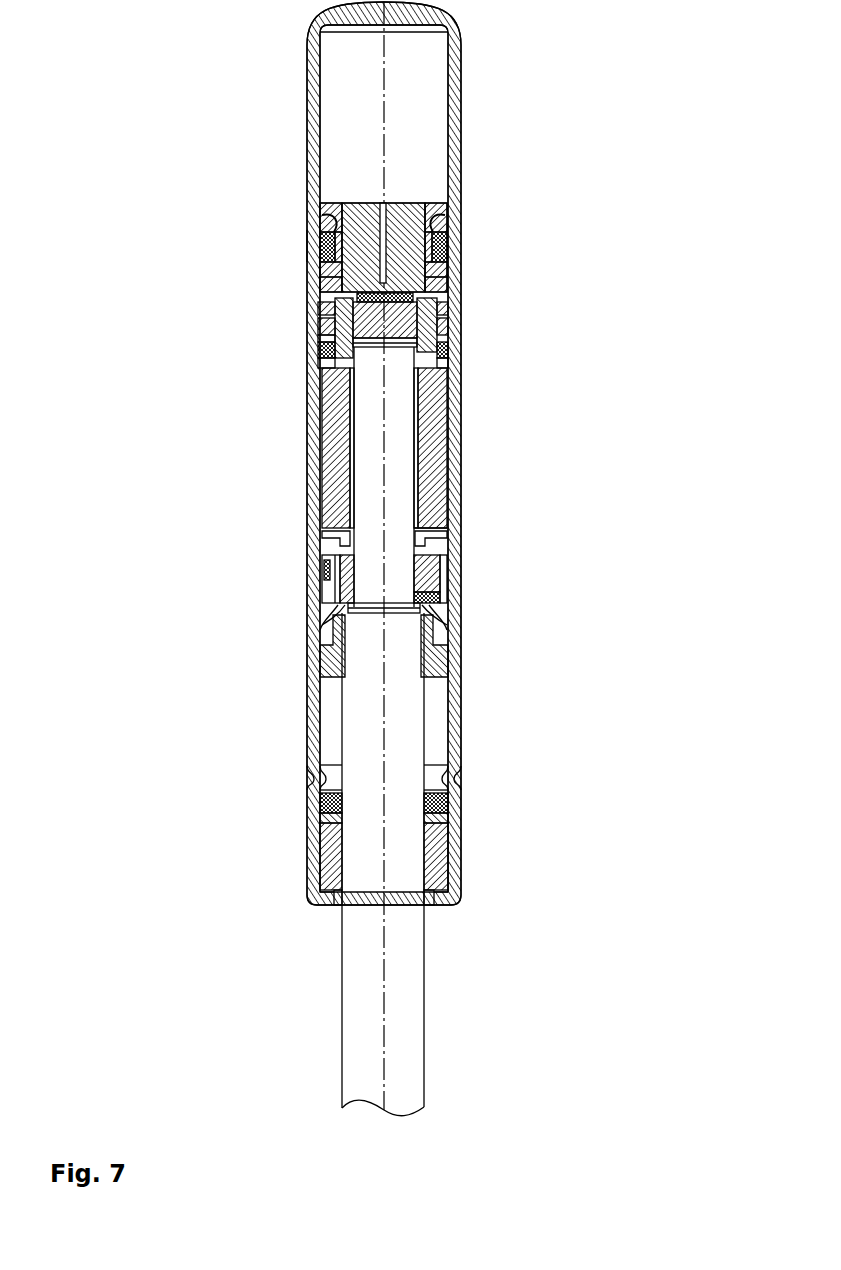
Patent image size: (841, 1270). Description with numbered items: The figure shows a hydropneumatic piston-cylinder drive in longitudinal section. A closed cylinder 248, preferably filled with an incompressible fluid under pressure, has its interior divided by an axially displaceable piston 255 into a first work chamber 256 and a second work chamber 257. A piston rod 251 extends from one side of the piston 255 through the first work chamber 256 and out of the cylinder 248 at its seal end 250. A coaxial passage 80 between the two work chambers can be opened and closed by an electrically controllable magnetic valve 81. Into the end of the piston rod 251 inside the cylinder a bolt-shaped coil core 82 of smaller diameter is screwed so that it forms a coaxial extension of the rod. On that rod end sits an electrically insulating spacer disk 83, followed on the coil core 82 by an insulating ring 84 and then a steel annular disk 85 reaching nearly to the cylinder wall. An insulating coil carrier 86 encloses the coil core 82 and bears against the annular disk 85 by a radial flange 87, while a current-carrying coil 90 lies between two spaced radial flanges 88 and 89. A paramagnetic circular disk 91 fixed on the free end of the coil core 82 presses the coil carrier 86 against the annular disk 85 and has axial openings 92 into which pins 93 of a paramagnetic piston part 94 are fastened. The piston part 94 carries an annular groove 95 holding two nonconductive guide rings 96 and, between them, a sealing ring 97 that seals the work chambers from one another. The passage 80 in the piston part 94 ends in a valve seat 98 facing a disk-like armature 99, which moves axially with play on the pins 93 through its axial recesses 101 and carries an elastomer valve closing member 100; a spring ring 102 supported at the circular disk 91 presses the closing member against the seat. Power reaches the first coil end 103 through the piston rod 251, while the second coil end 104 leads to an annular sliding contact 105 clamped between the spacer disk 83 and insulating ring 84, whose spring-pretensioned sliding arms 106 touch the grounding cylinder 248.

The passage 80 is at (380, 202).
The magnetic valve 81 is at (476, 308).
The coil core 82 is at (402, 513).
The spacer disk 83 is at (447, 673).
The insulating ring 84 is at (320, 602).
The annular disk 85 is at (455, 601).
The coil carrier 86 is at (345, 455).
The radial flange 87 is at (320, 562).
The radial flange 88 is at (440, 529).
The radial flange 89 is at (450, 368).
The coil 90 is at (440, 475).
The circular disk 91 is at (308, 372).
The axial openings 92 is at (440, 350).
The pins 93 is at (318, 336).
The piston part 94 is at (460, 157).
The annular groove 95 is at (320, 222).
The guide rings 96 is at (428, 203).
The sealing ring 97 is at (455, 240).
The valve seat 98 is at (455, 290).
The armature 99 is at (318, 294).
The valve closing member 100 is at (455, 318).
The axial recesses 101 is at (318, 308).
The spring ring 102 is at (320, 350).
The first coil end 103 is at (455, 548).
The second coil end 104 is at (325, 548).
The sliding contact 105 is at (462, 612).
The sliding arms 106 is at (455, 622).
The cylinder 248 is at (452, 828).
The seal end 250 is at (447, 900).
The piston rod 251 is at (415, 985).
The piston 255 is at (290, 245).
The first work chamber 256 is at (440, 752).
The second work chamber 257 is at (437, 68).